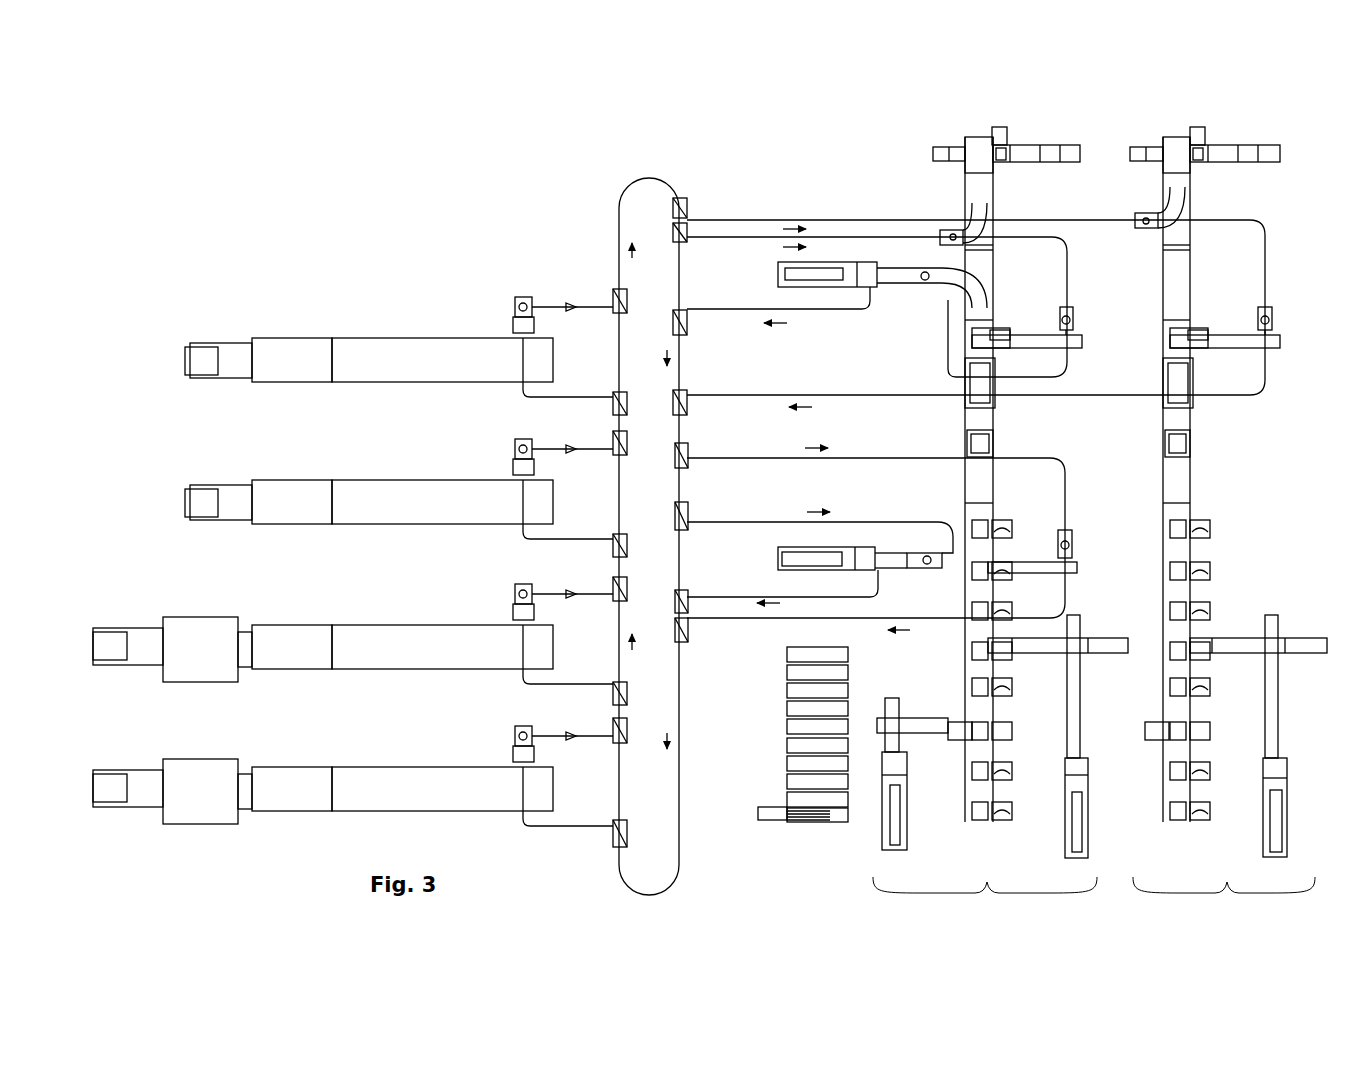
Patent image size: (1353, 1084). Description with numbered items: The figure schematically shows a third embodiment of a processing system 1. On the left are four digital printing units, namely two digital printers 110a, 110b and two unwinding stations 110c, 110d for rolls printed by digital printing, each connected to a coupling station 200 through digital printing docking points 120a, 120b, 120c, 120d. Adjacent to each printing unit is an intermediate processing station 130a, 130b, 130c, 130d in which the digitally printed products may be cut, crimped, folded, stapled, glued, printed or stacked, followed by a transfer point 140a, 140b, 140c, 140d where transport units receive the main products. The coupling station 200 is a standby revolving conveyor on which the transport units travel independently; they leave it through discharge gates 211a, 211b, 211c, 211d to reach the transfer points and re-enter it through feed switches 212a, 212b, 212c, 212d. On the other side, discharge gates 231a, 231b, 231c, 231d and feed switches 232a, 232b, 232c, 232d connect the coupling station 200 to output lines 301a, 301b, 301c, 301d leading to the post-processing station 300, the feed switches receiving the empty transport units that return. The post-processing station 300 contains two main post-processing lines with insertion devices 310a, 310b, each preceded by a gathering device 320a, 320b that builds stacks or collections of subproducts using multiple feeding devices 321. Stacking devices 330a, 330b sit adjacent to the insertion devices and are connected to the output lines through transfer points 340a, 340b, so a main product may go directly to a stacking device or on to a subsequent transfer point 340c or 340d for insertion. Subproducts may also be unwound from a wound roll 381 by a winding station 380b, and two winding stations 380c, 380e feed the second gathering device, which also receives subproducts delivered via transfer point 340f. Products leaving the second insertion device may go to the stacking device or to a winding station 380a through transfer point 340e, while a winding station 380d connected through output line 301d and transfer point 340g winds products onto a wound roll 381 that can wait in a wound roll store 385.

The processing system 1 is at (272, 225).
The coupling station 200 is at (613, 203).
The post-processing station 300 is at (910, 138).
The digital printer 110a is at (188, 751).
The digital printer 110b is at (188, 606).
The unwinding station for rolls printed by digital printing 110c is at (265, 468).
The unwinding station for rolls printed by digital printing 110d is at (265, 326).
The digital printing docking point 120a is at (308, 778).
The digital printing docking point 120b is at (302, 643).
The digital printing docking point 120c is at (315, 489).
The digital printing docking point 120d is at (315, 347).
The intermediate processing station 130a is at (455, 778).
The intermediate processing station 130b is at (447, 643).
The intermediate processing station 130c is at (455, 489).
The intermediate processing station 130d is at (460, 347).
The transfer point 140a is at (518, 730).
The transfer point 140b is at (518, 588).
The transfer point 140c is at (518, 442).
The transfer point 140d is at (518, 300).
The discharge gate 211a is at (617, 833).
The discharge gate 211b is at (620, 683).
The discharge gate 211c is at (617, 534).
The discharge gate 211d is at (617, 392).
The feed switch 212a is at (614, 722).
The feed switch 212b is at (614, 580).
The feed switch 212c is at (614, 434).
The feed switch 212d is at (614, 292).
The discharge gate 231a is at (690, 208).
The discharge gate 231b is at (687, 238).
The discharge gate 231c is at (686, 462).
The discharge gate 231d is at (686, 525).
The feed switch 232a is at (685, 408).
The feed switch 232b is at (685, 330).
The feed switch 232c is at (686, 634).
The feed switch 232d is at (685, 595).
The output line 301a is at (850, 218).
The output line 301b is at (873, 237).
The output line 301c is at (945, 455).
The output line 301d is at (892, 520).
The insertion device 310a is at (1173, 383).
The insertion device 310b is at (980, 392).
The gathering device 320a is at (1146, 785).
The gathering device 320b is at (950, 812).
The feeding device 321 is at (1192, 535).
The stacking device 330a is at (1220, 128).
The stacking device 330b is at (1025, 128).
The transfer point 340a is at (1145, 217).
The transfer point 340b is at (950, 232).
The transfer point 340c is at (1262, 315).
The transfer point 340d is at (1063, 315).
The transfer point 340e is at (922, 279).
The transfer point 340f is at (1063, 543).
The transfer point 340g is at (937, 565).
The winding station 380a is at (860, 277).
The winding station 380b is at (1272, 775).
The winding station 380c is at (1075, 773).
The winding station 380d is at (863, 558).
The winding station 380e is at (890, 780).
The wound roll 381 is at (812, 273).
The wound roll store 385 is at (786, 828).